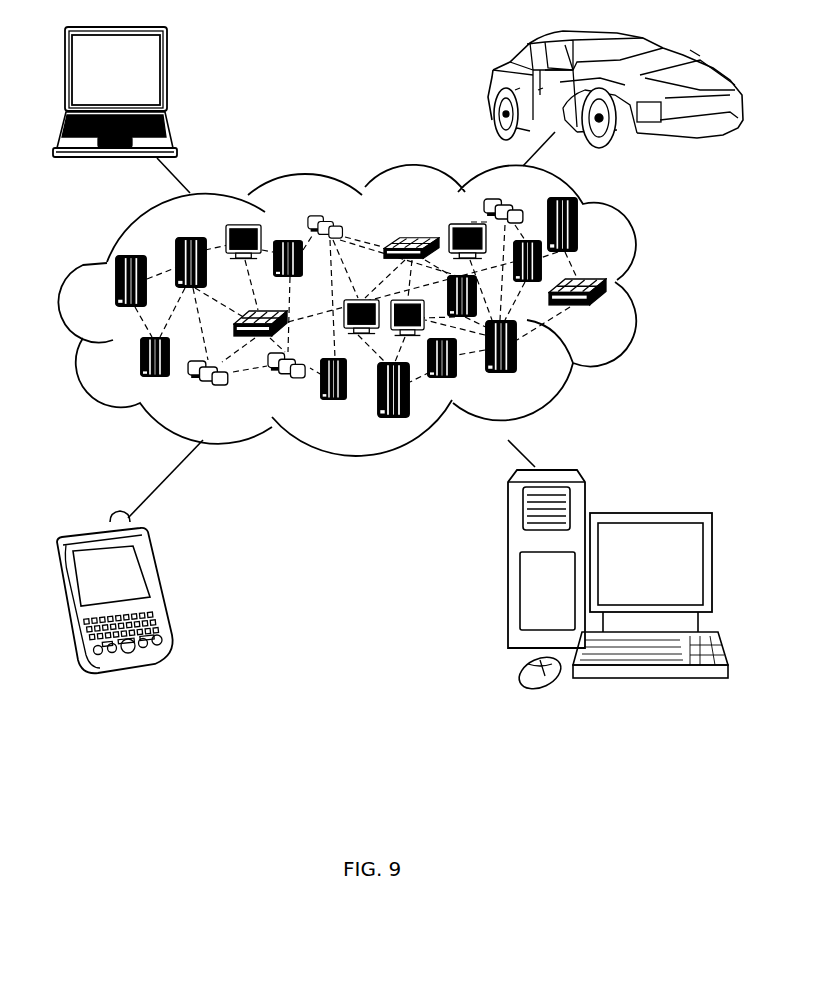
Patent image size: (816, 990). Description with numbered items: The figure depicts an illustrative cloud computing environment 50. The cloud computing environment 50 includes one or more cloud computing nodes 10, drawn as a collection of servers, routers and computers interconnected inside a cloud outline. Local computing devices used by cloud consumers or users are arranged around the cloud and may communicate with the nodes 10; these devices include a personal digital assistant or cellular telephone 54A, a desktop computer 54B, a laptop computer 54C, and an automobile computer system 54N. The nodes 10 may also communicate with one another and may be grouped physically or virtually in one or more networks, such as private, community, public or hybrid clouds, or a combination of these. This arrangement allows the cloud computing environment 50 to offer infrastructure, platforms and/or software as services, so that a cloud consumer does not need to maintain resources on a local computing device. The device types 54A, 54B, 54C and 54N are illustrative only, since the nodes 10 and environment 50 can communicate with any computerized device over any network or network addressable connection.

The cloud computing environment 50 is at (645, 292).
The cloud computing nodes 10 is at (612, 314).
The personal digital assistant or cellular telephone 54A is at (158, 587).
The desktop computer 54B is at (650, 512).
The laptop computer 54C is at (168, 73).
The automobile computer system 54N is at (492, 92).